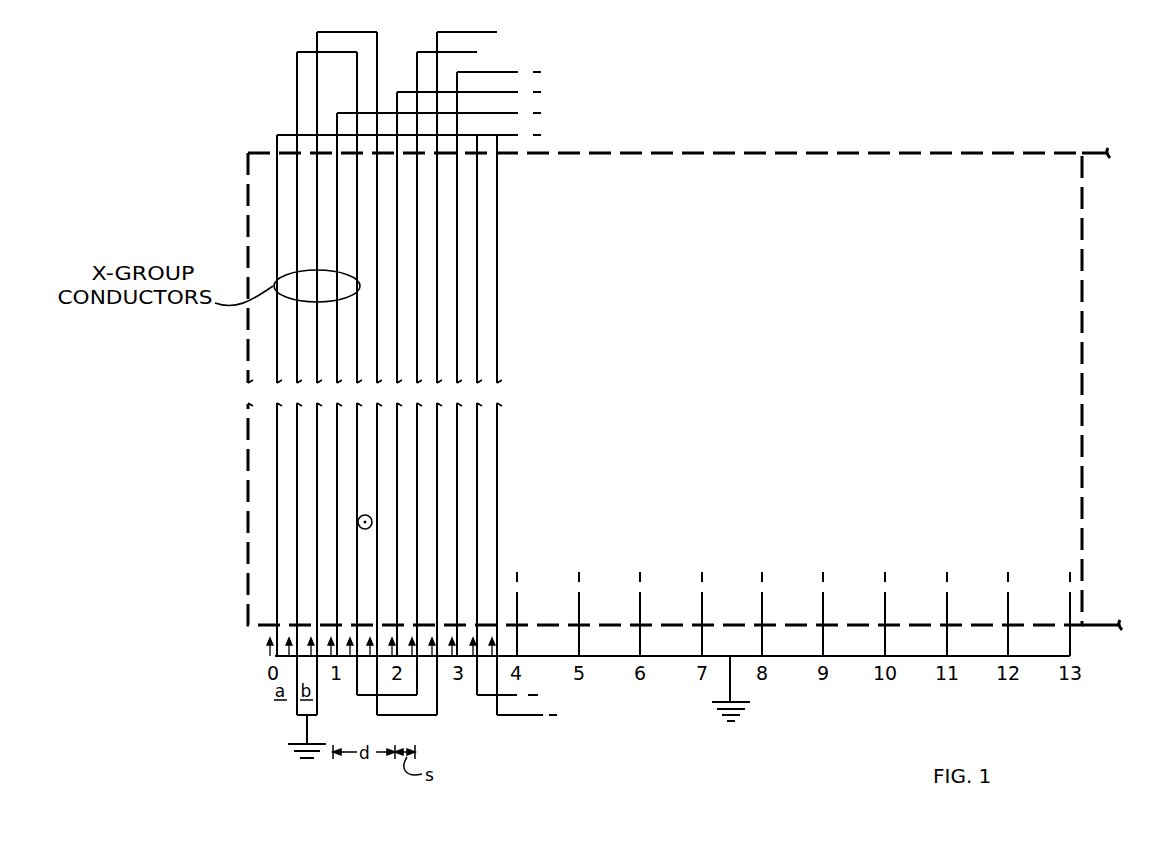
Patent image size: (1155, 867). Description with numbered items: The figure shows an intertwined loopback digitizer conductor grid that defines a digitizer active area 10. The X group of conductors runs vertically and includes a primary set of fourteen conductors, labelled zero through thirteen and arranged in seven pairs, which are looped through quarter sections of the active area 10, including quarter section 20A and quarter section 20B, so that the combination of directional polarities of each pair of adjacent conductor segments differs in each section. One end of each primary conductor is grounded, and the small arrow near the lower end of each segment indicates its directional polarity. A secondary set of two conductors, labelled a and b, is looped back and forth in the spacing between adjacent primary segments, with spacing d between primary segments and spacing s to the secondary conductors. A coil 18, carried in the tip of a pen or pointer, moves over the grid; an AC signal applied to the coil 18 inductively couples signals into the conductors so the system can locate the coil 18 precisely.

The digitizer active area 10 is at (685, 153).
The coil 18 is at (367, 515).
The quarter section 20A is at (779, 368).
The quarter section 20B is at (1143, 395).